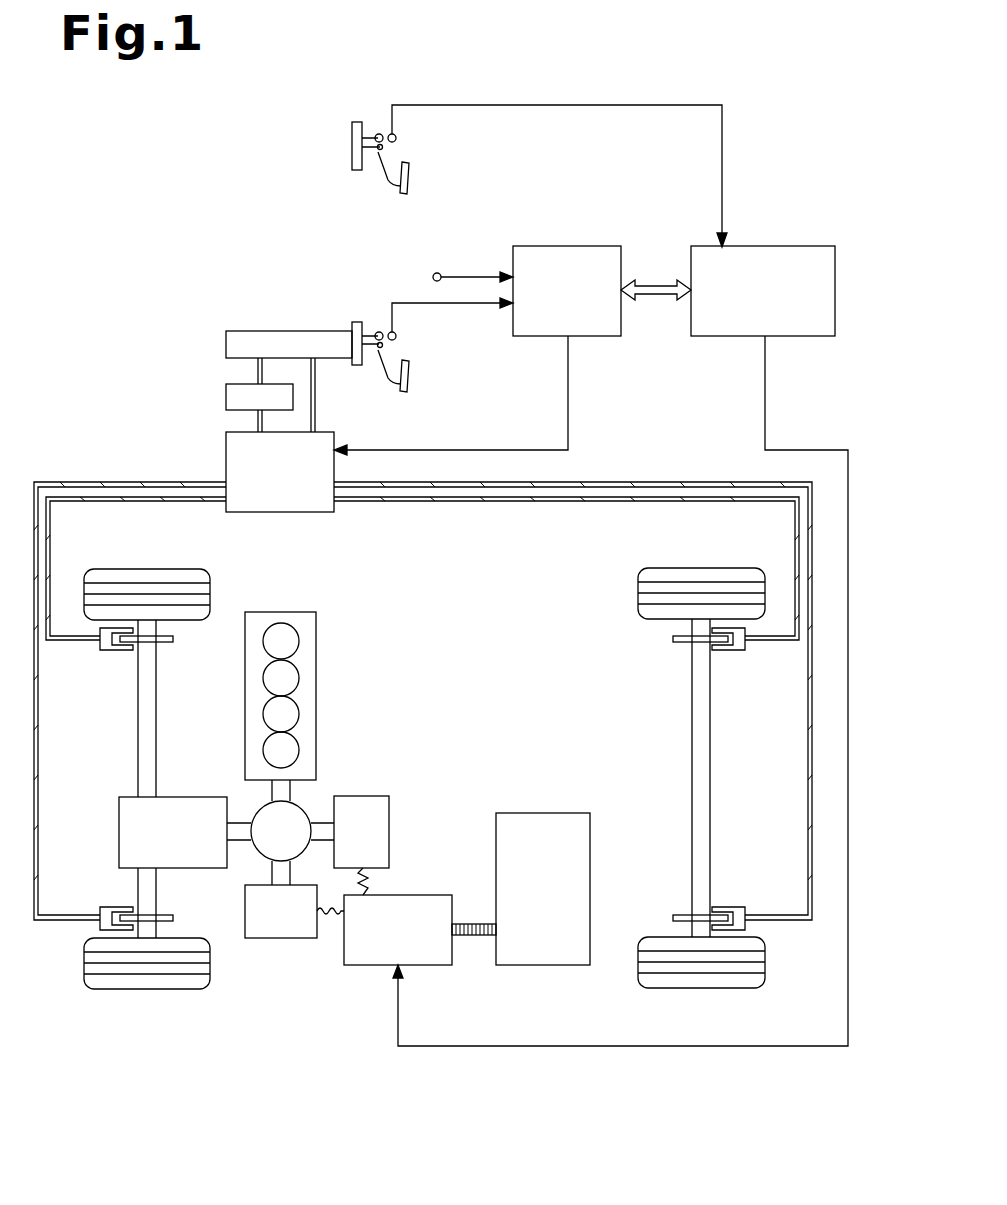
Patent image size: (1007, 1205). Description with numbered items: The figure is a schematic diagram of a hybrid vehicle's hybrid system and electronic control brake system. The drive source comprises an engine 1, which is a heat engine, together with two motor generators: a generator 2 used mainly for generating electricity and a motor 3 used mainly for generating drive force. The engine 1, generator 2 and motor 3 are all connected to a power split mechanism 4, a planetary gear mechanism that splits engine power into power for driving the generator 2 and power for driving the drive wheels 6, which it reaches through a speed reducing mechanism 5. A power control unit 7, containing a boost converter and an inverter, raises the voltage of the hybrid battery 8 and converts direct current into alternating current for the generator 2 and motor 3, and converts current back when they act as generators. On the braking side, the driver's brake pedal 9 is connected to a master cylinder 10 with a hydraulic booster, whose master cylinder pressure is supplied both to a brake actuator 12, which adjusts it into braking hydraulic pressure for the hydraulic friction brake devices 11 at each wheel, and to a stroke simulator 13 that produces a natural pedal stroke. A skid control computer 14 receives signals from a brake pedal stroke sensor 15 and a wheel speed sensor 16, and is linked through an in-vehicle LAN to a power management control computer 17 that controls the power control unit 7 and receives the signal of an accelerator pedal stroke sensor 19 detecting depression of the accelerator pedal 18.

The engine 1 is at (317, 645).
The generator 2 is at (389, 806).
The motor 3 is at (298, 940).
The power split mechanism 4 is at (257, 805).
The speed reducing mechanism 5 is at (119, 808).
The drive wheels 6 is at (138, 735).
The power control unit 7 is at (438, 895).
The hybrid battery 8 is at (522, 813).
The brake pedal 9 is at (390, 386).
The master cylinder 10 is at (288, 331).
The hydraulic friction brake devices 11 is at (116, 651).
The brake actuator 12 is at (226, 440).
The stroke simulator 13 is at (226, 396).
The skid control computer 14 is at (568, 246).
The brake pedal stroke sensor 15 is at (397, 337).
The wheel speed sensor 16 is at (433, 277).
The power management control computer 17 is at (797, 246).
The accelerator pedal 18 is at (392, 192).
The accelerator pedal stroke sensor 19 is at (397, 139).